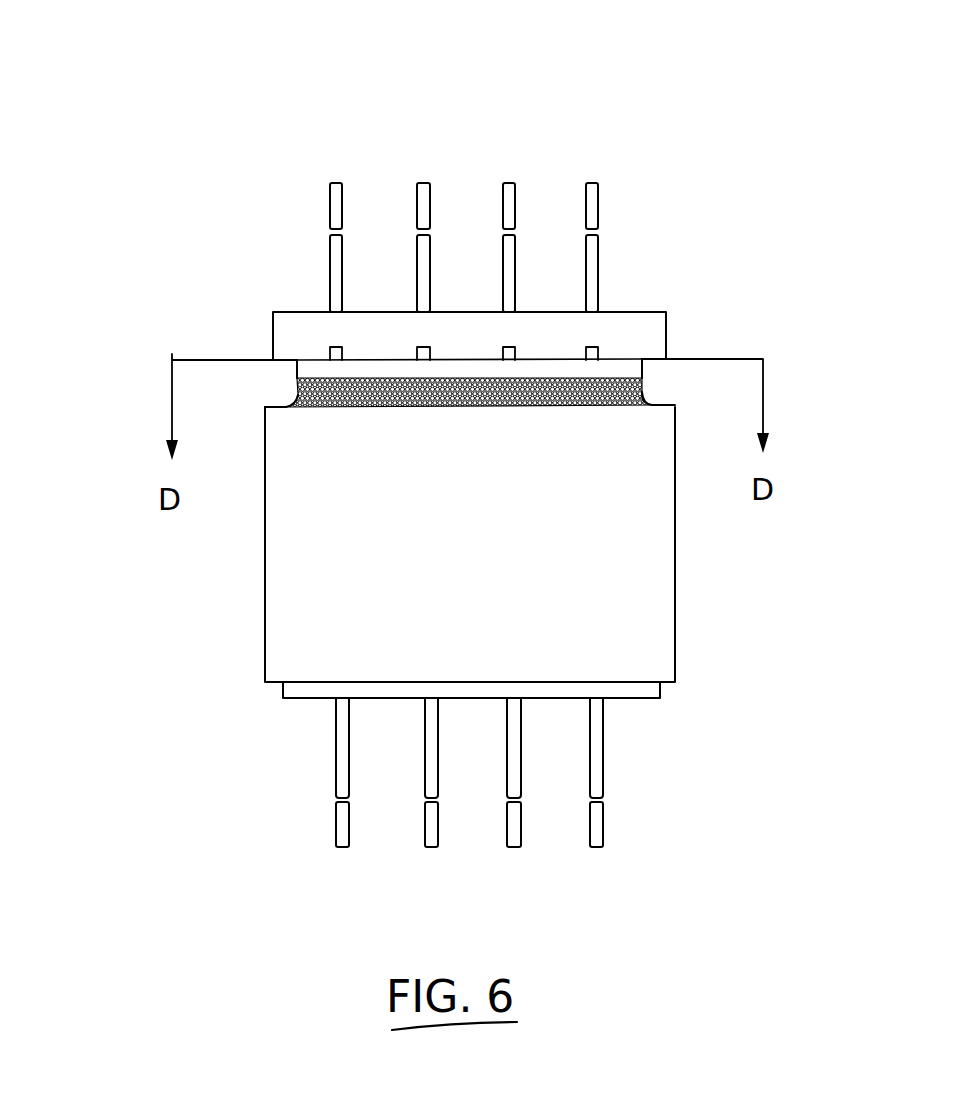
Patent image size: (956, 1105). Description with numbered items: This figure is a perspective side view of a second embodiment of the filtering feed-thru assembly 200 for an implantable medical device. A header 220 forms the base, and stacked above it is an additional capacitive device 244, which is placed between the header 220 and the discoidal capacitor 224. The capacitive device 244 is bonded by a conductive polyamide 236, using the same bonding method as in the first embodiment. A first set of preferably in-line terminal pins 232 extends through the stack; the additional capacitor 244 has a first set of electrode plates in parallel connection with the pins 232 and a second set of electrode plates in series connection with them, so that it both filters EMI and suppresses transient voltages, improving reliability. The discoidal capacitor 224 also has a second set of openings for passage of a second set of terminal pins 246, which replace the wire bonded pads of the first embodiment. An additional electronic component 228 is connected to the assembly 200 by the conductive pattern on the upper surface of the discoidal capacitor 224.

The filtering feed-thru assembly 200 is at (246, 592).
The second set of terminal pins 246 is at (340, 175).
The additional electronic component 228 is at (660, 302).
The discoidal capacitor 224 is at (643, 368).
The conductive polyamide 236 is at (298, 396).
The additional capacitive device 244 is at (677, 547).
The header 220 is at (663, 690).
The first set of in-line terminal pins 232 is at (327, 748).